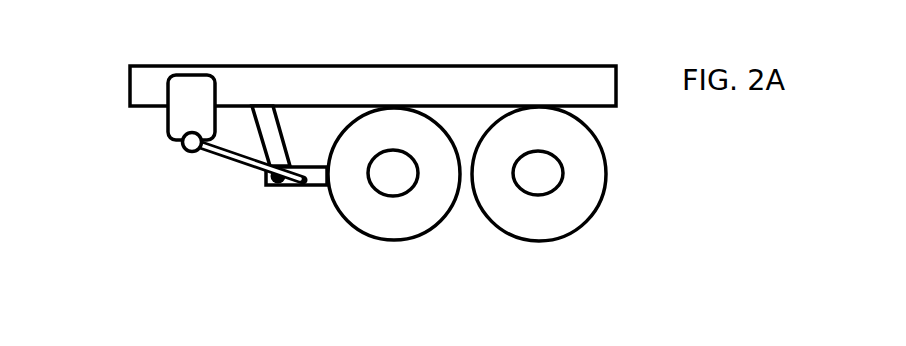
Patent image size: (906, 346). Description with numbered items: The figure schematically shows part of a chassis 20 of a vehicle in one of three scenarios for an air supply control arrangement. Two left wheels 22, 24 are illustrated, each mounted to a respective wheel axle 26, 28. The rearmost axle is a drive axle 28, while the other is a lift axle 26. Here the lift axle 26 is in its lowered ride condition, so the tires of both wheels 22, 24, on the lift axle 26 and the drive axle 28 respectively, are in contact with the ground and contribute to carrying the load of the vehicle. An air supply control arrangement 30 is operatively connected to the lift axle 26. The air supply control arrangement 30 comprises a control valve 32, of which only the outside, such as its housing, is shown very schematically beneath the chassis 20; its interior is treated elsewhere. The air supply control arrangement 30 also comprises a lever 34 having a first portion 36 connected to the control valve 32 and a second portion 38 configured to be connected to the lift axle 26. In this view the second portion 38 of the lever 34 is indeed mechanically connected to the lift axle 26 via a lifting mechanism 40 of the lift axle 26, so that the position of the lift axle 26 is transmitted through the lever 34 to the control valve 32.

The chassis 20 is at (307, 65).
The left wheel 22 is at (420, 217).
The left wheel 24 is at (580, 205).
The lift axle 26 is at (394, 176).
The drive axle 28 is at (538, 178).
The air supply control arrangement 30 is at (141, 158).
The control valve 32 is at (168, 122).
The lever 34 is at (232, 162).
The first portion 36 is at (197, 153).
The second portion 38 is at (303, 185).
The lifting mechanism 40 is at (313, 185).